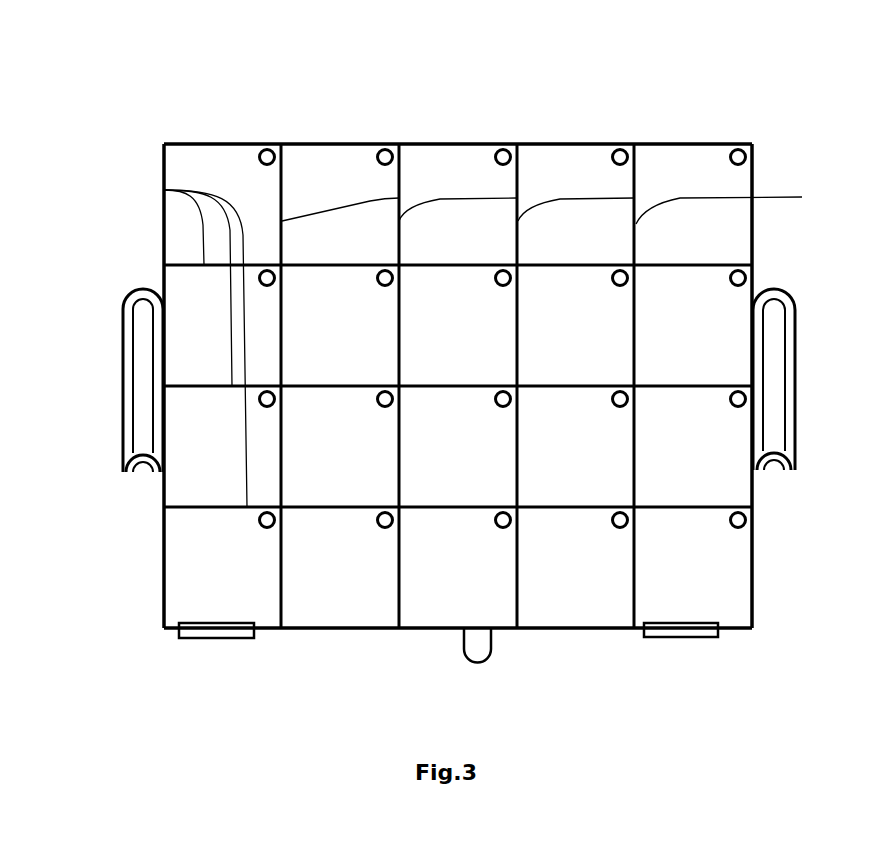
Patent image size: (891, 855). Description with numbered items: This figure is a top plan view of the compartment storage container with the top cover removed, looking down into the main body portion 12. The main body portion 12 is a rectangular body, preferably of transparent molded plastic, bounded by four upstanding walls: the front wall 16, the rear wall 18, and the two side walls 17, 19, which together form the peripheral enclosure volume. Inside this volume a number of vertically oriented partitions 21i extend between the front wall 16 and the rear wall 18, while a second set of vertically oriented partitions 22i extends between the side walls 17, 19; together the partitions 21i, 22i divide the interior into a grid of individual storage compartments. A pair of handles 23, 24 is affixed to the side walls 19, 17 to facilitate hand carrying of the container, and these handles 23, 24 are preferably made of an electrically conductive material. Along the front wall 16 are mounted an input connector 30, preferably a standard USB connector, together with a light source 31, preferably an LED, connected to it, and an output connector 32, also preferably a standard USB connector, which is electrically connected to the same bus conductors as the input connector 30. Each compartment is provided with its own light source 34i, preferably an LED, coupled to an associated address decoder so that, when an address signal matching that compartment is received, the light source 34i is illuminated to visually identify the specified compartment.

The main body portion 12 is at (266, 122).
The front wall 16 is at (743, 630).
The side wall 17 is at (752, 248).
The rear wall 18 is at (543, 143).
The side wall 19 is at (160, 238).
The vertically oriented partitions 21i is at (570, 204).
The vertically oriented partitions 22i is at (165, 190).
The handle 23 is at (797, 398).
The handle 24 is at (121, 358).
The input connector 30 is at (228, 639).
The light source 31 is at (488, 662).
The output connector 32 is at (677, 638).
The light source 34i is at (634, 262).